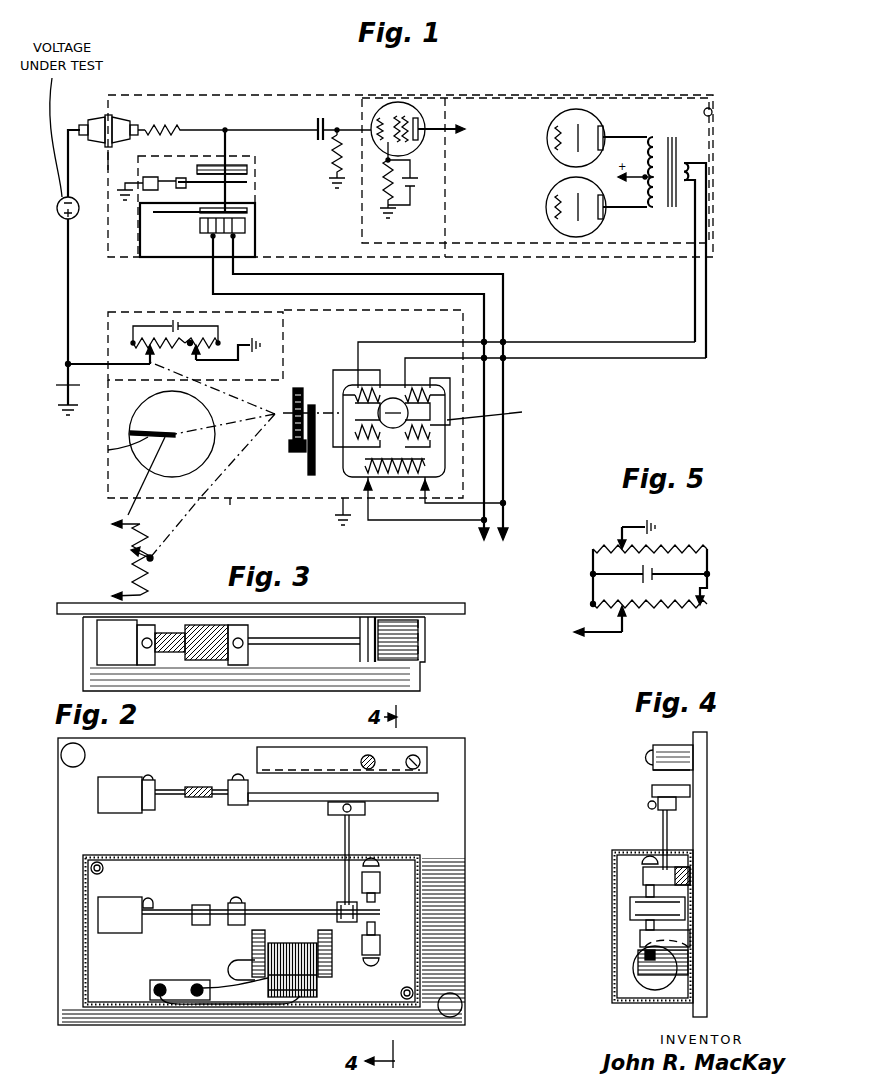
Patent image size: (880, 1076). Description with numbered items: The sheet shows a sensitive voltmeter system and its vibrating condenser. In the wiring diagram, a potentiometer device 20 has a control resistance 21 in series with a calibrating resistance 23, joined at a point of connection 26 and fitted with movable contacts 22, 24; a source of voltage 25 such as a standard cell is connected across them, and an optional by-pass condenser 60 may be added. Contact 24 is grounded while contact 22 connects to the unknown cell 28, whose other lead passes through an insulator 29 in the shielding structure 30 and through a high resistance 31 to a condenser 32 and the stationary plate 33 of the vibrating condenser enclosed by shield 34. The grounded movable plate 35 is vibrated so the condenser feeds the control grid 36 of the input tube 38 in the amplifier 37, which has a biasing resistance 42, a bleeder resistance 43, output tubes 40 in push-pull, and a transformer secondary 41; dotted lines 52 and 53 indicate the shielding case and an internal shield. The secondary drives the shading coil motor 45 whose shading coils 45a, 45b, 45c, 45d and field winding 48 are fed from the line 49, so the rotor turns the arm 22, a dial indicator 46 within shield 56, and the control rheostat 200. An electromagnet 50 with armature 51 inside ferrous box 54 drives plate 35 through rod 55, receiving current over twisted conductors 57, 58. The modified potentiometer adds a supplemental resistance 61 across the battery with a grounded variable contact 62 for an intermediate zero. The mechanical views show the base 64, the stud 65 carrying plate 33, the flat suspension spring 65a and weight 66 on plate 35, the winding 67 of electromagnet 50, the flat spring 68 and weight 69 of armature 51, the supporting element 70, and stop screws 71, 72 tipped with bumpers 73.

In FIG. 1, the potentiometer device 20 is at (108, 331).
In FIG. 1, the control resistance 21 is at (155, 342).
In FIG. 5, the control resistance 21 is at (593, 602).
In FIG. 1, the movable contact 22 is at (147, 357).
In FIG. 5, the movable contact 22 is at (625, 626).
In FIG. 1, the calibrating or adjusting resistance 23 is at (218, 343).
In FIG. 5, the calibrating or adjusting resistance 23 is at (700, 606).
In FIG. 1, the movable contact 24 is at (200, 358).
In FIG. 5, the movable contact 24 is at (703, 598).
In FIG. 1, the source of voltage 25 is at (177, 318).
In FIG. 5, the source of voltage 25 is at (655, 578).
In FIG. 1, the point of connection 26 is at (194, 342).
In FIG. 1, the cell 28 is at (57, 214).
In FIG. 1, the insulator 29 is at (88, 120).
In FIG. 1, the shielding structure 30 is at (222, 95).
In FIG. 1, the high resistance 31 is at (170, 125).
In FIG. 1, the condenser 32 is at (322, 116).
In FIG. 1, the stationary plate 33 is at (236, 165).
In FIG. 3, the stationary plate 33 is at (428, 640).
In FIG. 2, the stationary plate 33 is at (428, 770).
In FIG. 4, the stationary plate 33 is at (655, 771).
In FIG. 1, the vibrating condenser shield 34 is at (250, 168).
In FIG. 1, the movable plate 35 is at (249, 182).
In FIG. 2, the movable plate 35 is at (438, 797).
In FIG. 4, the movable plate 35 is at (690, 791).
In FIG. 1, the control grid 36 is at (385, 105).
In FIG. 1, the vacuum tube amplifier 37 is at (712, 112).
In FIG. 1, the input tube 38 is at (418, 112).
In FIG. 1, the vacuum tubes 40 is at (552, 200).
In FIG. 1, the secondary 41 is at (695, 170).
In FIG. 1, the biasing resistance 42 is at (388, 206).
In FIG. 1, the grid or bleeder resistance 43 is at (337, 180).
In FIG. 1, the shading coil motor 45 is at (445, 413).
In FIG. 1, the shading coil 45a is at (362, 385).
In FIG. 1, the shading coil 45b is at (410, 385).
In FIG. 1, the shading coil 45c is at (430, 456).
In FIG. 1, the shading coil 45d is at (365, 445).
In FIG. 1, the dial indicator 46 is at (116, 457).
In FIG. 1, the field winding 48 is at (408, 482).
In FIG. 1, the alternating current line 49 is at (507, 526).
In FIG. 1, the electromagnet 50 is at (247, 228).
In FIG. 2, the electromagnet 50 is at (334, 940).
In FIG. 4, the electromagnet 50 is at (643, 938).
In FIG. 1, the armature 51 is at (249, 212).
In FIG. 2, the armature 51 is at (340, 905).
In FIG. 4, the armature 51 is at (632, 908).
In FIG. 1, the shielding case 52 is at (108, 160).
In FIG. 1, the shield 53 is at (448, 158).
In FIG. 1, the box 54 is at (140, 243).
In FIG. 2, the box 54 is at (94, 980).
In FIG. 4, the box 54 is at (680, 850).
In FIG. 1, the rod 55 is at (234, 195).
In FIG. 2, the rod 55 is at (350, 835).
In FIG. 4, the rod 55 is at (668, 836).
In FIG. 1, the shield 56 is at (232, 503).
In FIG. 1, the conductor 57 is at (505, 298).
In FIG. 1, the conductor 58 is at (487, 320).
In FIG. 1, the by-pass condenser 60 is at (56, 385).
In FIG. 5, the supplemental resistance 61 is at (600, 548).
In FIG. 5, the variable contact 62 is at (618, 526).
In FIG. 3, the base 64 is at (465, 605).
In FIG. 2, the base 64 is at (430, 752).
In FIG. 4, the base 64 is at (708, 868).
In FIG. 3, the stud 65 is at (386, 625).
In FIG. 2, the stud 65 is at (360, 762).
In FIG. 4, the stud 65 is at (670, 745).
In FIG. 3, the flat suspension spring 65a is at (170, 633).
In FIG. 2, the flat suspension spring 65a is at (192, 785).
In FIG. 3, the weight 66 is at (238, 665).
In FIG. 2, the weight 66 is at (240, 806).
In FIG. 1, the winding 67 is at (210, 240).
In FIG. 2, the winding 67 is at (305, 998).
In FIG. 4, the winding 67 is at (640, 985).
In FIG. 2, the flat spring 68 is at (195, 925).
In FIG. 2, the weight 69 is at (236, 900).
In FIG. 2, the supporting element 70 is at (240, 962).
In FIG. 2, the stop screw 71 is at (380, 960).
In FIG. 4, the stop screw 71 is at (645, 955).
In FIG. 2, the stop screw 72 is at (380, 858).
In FIG. 4, the stop screw 72 is at (645, 862).
In FIG. 2, the bumpers 73 is at (382, 886).
In FIG. 4, the bumpers 73 is at (646, 892).
In FIG. 1, the control rheostat 200 is at (154, 559).